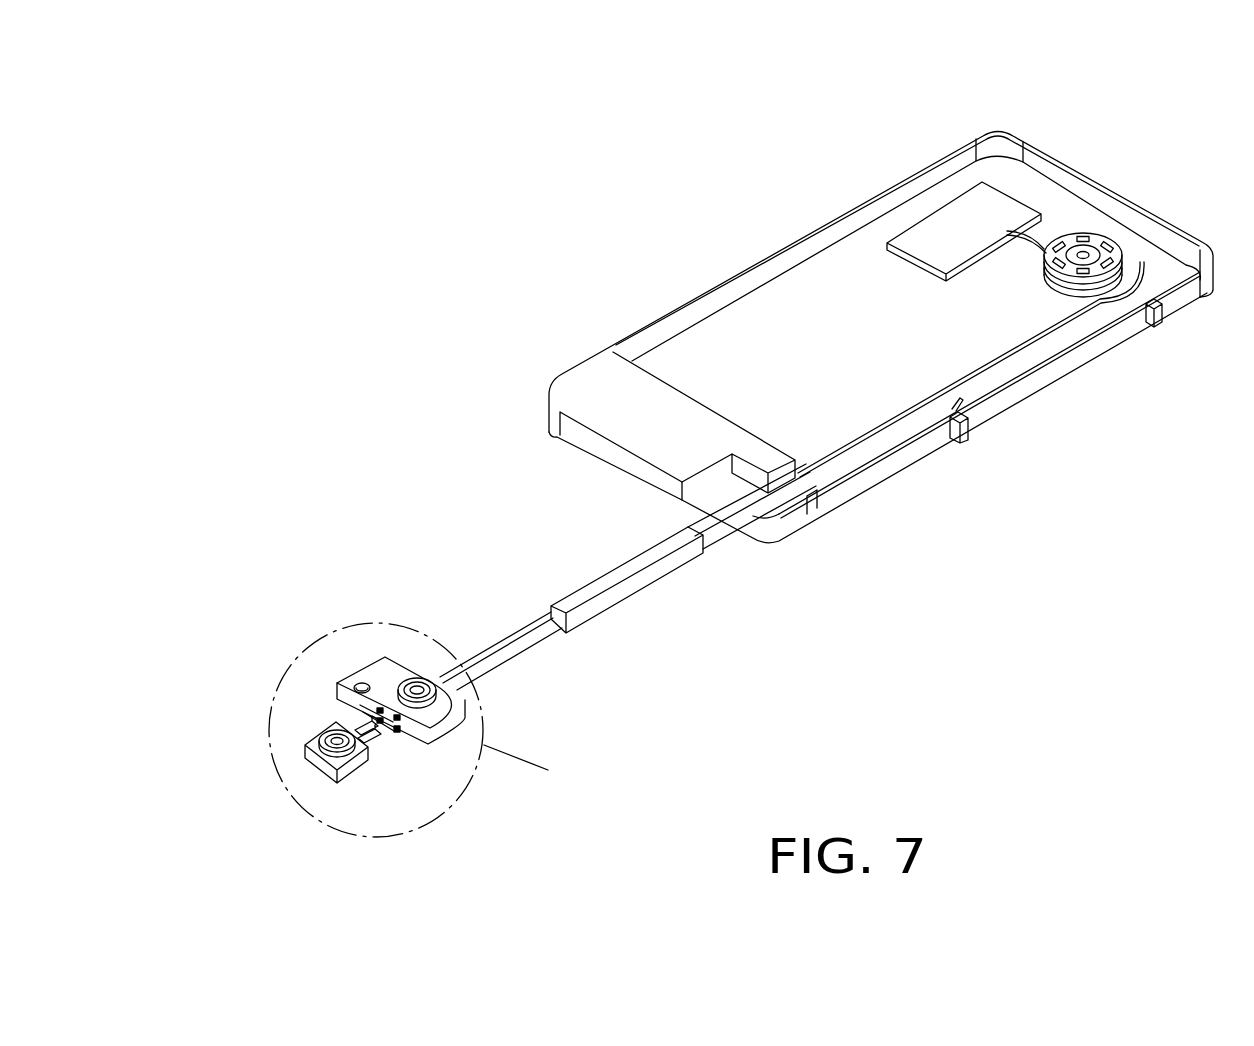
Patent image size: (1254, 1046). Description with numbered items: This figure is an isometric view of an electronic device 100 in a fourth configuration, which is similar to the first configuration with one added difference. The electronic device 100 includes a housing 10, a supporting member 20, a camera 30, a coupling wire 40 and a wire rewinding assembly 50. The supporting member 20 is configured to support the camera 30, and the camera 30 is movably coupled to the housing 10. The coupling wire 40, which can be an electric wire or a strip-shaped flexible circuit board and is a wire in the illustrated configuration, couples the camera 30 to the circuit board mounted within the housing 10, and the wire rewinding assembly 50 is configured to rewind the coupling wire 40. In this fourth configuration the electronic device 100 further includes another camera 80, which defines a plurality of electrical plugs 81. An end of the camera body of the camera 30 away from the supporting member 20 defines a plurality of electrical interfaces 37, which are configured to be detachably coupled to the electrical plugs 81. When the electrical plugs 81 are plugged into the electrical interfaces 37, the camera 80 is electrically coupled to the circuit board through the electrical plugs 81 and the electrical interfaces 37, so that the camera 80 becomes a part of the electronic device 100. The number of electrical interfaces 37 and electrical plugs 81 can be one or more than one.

The electronic device 100 is at (636, 113).
The housing 10 is at (582, 386).
The supporting member 20 is at (520, 644).
The camera 30 is at (368, 624).
The electrical interfaces 37 is at (372, 725).
The coupling wire 40 is at (877, 438).
The wire rewinding assembly 50 is at (1098, 241).
The camera 80 is at (328, 744).
The electrical plugs 81 is at (370, 748).